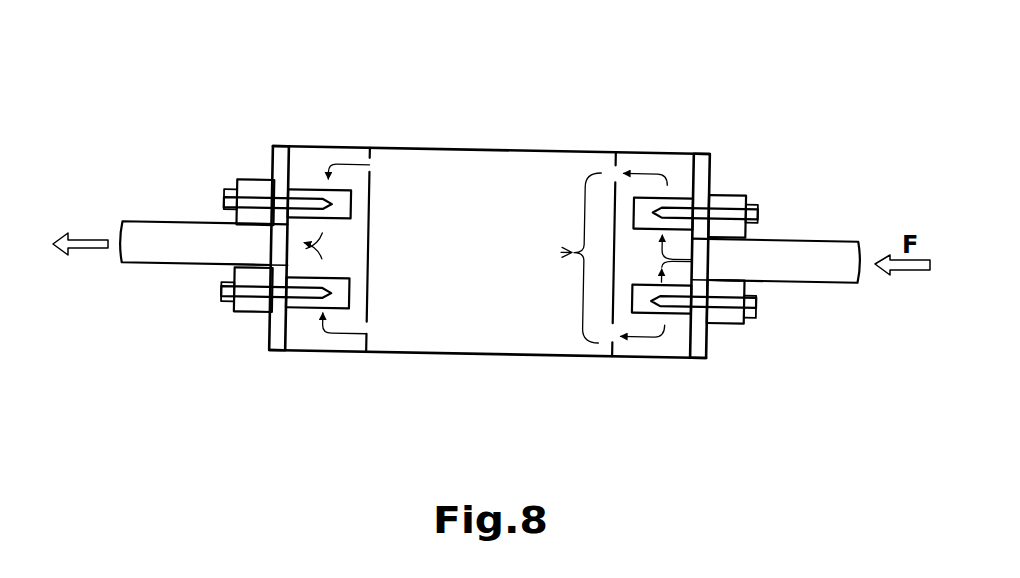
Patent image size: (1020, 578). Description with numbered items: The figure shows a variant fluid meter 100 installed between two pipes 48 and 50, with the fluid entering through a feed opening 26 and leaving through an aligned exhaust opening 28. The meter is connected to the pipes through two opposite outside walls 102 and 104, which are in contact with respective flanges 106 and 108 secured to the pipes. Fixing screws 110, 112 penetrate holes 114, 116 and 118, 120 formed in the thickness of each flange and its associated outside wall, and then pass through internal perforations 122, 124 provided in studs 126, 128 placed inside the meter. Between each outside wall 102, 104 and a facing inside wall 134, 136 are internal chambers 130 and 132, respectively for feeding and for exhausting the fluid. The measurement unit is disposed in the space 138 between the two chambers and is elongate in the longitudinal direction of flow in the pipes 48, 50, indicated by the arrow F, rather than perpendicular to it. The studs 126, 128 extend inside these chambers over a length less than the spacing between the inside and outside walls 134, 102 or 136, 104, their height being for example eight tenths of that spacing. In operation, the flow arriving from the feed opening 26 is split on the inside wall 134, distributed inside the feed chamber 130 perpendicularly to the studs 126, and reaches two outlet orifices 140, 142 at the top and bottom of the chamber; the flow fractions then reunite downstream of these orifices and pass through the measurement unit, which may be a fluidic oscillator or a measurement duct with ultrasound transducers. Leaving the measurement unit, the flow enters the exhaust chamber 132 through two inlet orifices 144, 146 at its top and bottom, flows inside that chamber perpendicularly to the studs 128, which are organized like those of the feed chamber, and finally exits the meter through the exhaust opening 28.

The feed opening 26 is at (698, 268).
The exhaust opening 28 is at (270, 260).
The pipe 48 is at (803, 240).
The pipe 50 is at (156, 220).
The fluid meter 100 is at (230, 379).
The outside wall 102 is at (700, 343).
The outside wall 104 is at (275, 157).
The flange 106 is at (737, 200).
The flange 108 is at (245, 190).
The fixing screw 110 is at (757, 212).
The fixing screw 112 is at (227, 203).
The hole 114 is at (720, 203).
The hole 116 is at (707, 197).
The hole 118 is at (257, 163).
The hole 120 is at (240, 215).
The internal perforation 122 is at (677, 200).
The internal perforation 124 is at (318, 188).
The stud 126 is at (685, 197).
The stud 128 is at (310, 198).
The feed chamber 130 is at (653, 347).
The exhaust chamber 132 is at (311, 333).
The inside wall 134 is at (610, 280).
The inside wall 136 is at (452, 165).
The space 138 is at (490, 170).
The outlet orifice 140 is at (617, 166).
The outlet orifice 142 is at (610, 342).
The inlet orifice 144 is at (369, 167).
The inlet orifice 146 is at (368, 333).